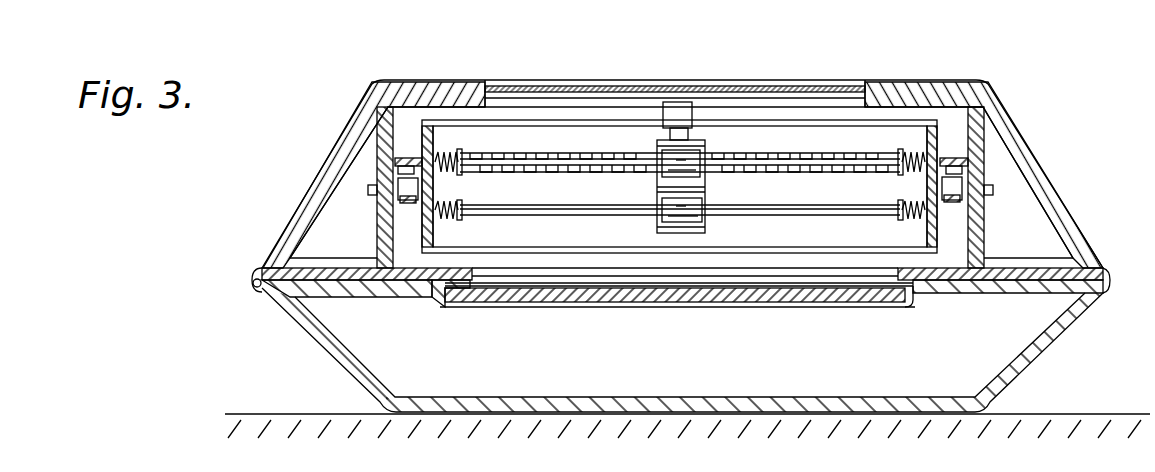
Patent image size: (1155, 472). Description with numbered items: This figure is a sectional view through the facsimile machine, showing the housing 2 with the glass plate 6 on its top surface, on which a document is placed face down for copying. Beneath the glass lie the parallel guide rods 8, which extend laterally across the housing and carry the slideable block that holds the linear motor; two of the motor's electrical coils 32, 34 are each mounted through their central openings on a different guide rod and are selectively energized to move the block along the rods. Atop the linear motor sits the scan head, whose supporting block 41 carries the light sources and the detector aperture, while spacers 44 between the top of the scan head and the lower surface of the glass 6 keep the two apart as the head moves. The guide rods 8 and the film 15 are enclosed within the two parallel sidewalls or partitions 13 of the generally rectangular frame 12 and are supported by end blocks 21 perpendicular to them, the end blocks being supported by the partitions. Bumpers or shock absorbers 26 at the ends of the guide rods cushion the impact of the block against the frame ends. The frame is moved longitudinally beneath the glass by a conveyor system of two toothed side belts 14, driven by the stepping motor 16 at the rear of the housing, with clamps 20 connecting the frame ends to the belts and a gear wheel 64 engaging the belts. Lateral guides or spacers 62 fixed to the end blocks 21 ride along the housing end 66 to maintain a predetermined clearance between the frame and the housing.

The housing 2 is at (1033, 158).
The glass plate 6 is at (787, 87).
The guide rods 8 is at (520, 158).
The frame 12 is at (410, 125).
The sidewalls or partitions 13 is at (838, 120).
The toothed side belts 14 is at (380, 222).
The film 15 is at (560, 172).
The stepping motor 16 is at (638, 136).
The clamps 20 is at (395, 160).
The end blocks 21 is at (404, 268).
The bumpers or shock absorbers 26 is at (442, 178).
The electrical coil 32 is at (705, 183).
The electrical coil 34 is at (705, 227).
The supporting block 41 is at (690, 112).
The spacers 44 is at (677, 98).
The lateral guides or spacers 62 is at (405, 158).
The gear wheel 64 is at (397, 203).
The housing end 66 is at (377, 250).